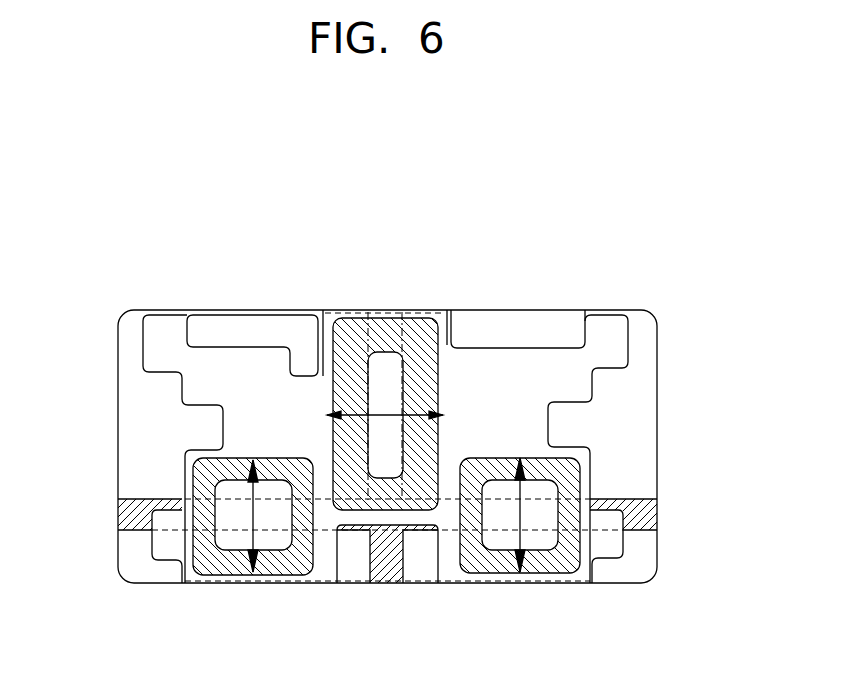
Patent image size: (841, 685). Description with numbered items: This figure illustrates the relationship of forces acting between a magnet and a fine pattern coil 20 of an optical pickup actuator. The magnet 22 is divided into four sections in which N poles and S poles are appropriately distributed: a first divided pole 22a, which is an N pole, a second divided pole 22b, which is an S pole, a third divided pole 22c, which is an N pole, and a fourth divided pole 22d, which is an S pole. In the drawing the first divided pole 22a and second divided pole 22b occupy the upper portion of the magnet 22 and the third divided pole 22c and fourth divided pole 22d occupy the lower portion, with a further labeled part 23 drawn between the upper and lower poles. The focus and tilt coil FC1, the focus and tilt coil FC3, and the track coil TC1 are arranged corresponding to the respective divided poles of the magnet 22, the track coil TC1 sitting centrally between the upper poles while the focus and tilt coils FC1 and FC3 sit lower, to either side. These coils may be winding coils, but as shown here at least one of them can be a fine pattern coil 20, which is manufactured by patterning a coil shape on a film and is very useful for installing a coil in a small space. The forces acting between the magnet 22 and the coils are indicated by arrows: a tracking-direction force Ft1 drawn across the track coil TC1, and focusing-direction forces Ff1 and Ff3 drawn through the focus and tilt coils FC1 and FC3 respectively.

The fine pattern coil 20 is at (545, 347).
The magnet 22 is at (490, 310).
The first divided pole 22a is at (650, 376).
The second divided pole 22b is at (122, 377).
The third divided pole 22c is at (148, 577).
The fourth divided pole 22d is at (628, 573).
The magnet 23 is at (657, 515).
The track coil TC1 is at (333, 316).
The focus and tilt coil FC1 is at (207, 577).
The focus and tilt coil FC3 is at (472, 573).
The tracking force Ft1 is at (373, 415).
The focusing force on FC1 Ff1 is at (257, 506).
The focusing force on FC3 Ff3 is at (522, 505).